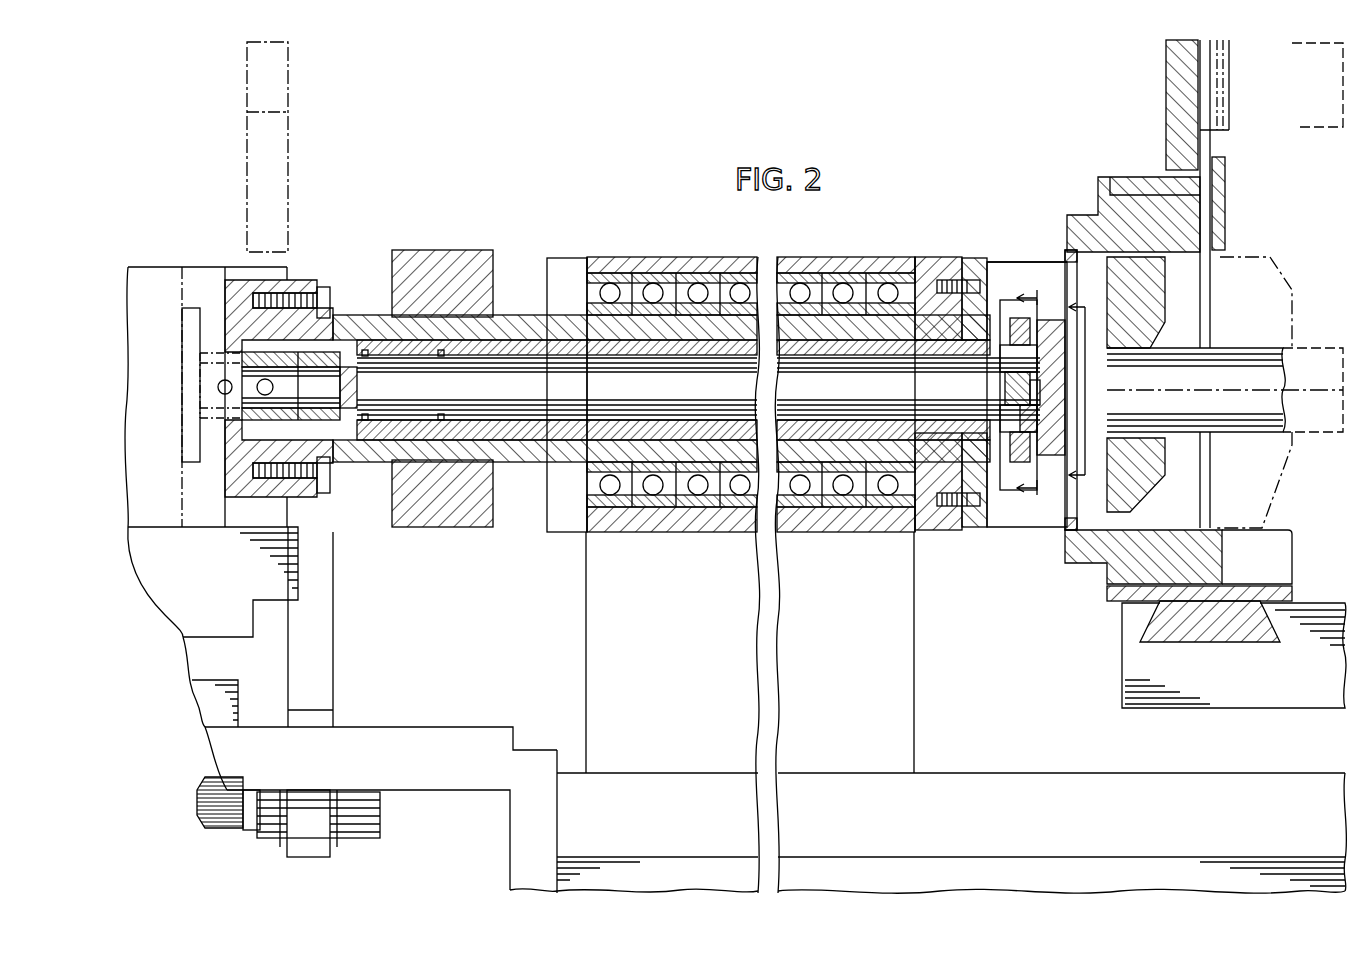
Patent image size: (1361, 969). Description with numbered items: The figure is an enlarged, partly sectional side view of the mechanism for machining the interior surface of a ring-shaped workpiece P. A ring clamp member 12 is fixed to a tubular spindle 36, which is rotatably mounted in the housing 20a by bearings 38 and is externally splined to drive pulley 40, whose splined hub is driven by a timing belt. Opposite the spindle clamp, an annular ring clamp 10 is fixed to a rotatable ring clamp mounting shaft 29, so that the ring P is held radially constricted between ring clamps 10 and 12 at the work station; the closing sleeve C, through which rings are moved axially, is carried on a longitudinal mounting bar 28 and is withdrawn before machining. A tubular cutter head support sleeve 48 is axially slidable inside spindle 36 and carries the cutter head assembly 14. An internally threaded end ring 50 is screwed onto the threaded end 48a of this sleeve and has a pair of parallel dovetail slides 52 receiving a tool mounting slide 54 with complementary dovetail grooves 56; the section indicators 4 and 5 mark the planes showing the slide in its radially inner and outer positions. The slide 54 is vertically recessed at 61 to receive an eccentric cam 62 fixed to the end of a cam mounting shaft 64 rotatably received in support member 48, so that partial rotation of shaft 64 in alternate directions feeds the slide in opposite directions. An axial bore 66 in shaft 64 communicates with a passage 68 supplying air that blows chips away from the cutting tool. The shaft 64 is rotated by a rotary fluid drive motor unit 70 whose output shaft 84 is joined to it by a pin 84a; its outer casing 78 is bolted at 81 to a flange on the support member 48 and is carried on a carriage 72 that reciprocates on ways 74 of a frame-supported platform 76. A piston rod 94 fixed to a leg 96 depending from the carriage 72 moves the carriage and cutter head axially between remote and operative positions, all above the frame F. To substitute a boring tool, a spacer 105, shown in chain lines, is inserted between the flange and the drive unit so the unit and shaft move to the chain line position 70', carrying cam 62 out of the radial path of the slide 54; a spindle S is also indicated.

The rotary fluid drive motor unit 70 is at (206, 353).
The outer casing 78 is at (160, 267).
The chain line position of the ROTAC unit 70' is at (192, 388).
The spacer 105 is at (288, 148).
The pin 84a is at (300, 352).
The output shaft 84 is at (328, 430).
The bolts 81 is at (324, 290).
The threaded end of tubular support member 48a is at (300, 490).
The drive pulley 40 is at (492, 292).
The tubular spindle 36 is at (525, 322).
The tubular cutter head support sleeve 48 is at (528, 452).
The cam mounting shaft 64 is at (605, 387).
The bearings 38 is at (848, 272).
The ring clamp member 12 is at (1010, 262).
The tool mounting slide 54 is at (1065, 372).
The dovetail grooves 56 is at (1018, 320).
The vertical recess 61 is at (1030, 368).
The axial bore 66 is at (1005, 390).
The air passage 68 is at (1040, 392).
The end ring 50 is at (1000, 420).
The cam 62 is at (1037, 418).
The dovetail slides 52 is at (1020, 460).
The cutter head assembly 14 is at (1008, 514).
The section line for FIG. 4 is at (1037, 395).
The section line for FIG. 5 is at (1086, 393).
The ring workpiece P is at (1082, 390).
The closing sleeve C is at (1078, 214).
The ring clamp 10 is at (1128, 290).
The housing portion 20a is at (1200, 143).
The spindle S is at (1300, 135).
The ring clamp mounting shaft 29 is at (1243, 349).
The longitudinal mounting bar 28 is at (1286, 697).
The carriage 72 is at (213, 582).
The ways 74 is at (218, 685).
The leg 96 is at (325, 665).
The frame-supported platform 76 is at (381, 810).
The piston rod 94 is at (232, 832).
The frame F is at (1272, 875).